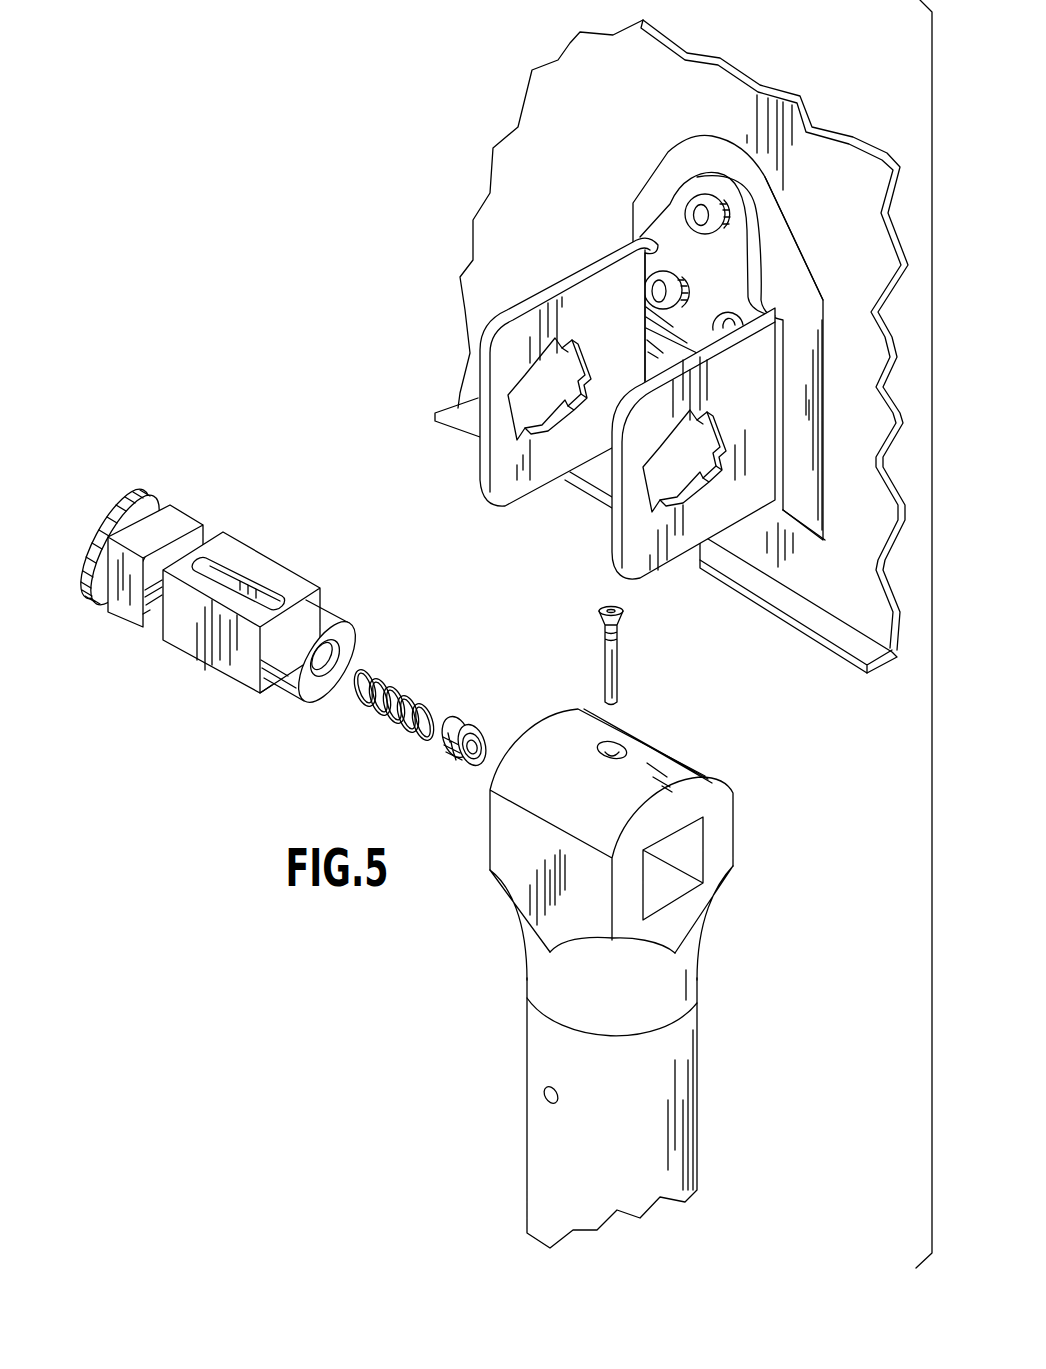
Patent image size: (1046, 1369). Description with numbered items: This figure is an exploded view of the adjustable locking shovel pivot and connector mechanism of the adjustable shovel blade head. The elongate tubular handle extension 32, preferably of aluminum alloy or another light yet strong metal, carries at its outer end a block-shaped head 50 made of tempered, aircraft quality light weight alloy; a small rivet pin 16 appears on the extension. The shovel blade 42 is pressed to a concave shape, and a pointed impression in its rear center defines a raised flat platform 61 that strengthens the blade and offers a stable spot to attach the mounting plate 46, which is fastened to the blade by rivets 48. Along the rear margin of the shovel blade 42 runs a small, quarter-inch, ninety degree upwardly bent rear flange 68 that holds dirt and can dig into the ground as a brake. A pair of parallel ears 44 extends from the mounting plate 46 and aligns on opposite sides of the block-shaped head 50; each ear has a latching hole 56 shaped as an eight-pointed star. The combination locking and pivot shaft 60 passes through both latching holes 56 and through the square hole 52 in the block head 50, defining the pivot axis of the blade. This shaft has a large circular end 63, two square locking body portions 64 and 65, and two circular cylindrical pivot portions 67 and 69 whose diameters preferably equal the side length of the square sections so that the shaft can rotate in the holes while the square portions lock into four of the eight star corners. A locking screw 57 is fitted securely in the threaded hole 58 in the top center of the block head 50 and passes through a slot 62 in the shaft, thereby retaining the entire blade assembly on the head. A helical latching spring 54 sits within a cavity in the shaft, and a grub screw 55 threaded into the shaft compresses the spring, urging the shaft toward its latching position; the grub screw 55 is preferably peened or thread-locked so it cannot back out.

The rivet pin 16 is at (546, 1100).
The tubular handle extension 32 is at (617, 1109).
The shovel blade 42 is at (727, 84).
The ears 44 is at (675, 398).
The mounting plate 46 is at (727, 337).
The rivets 48 is at (716, 320).
The block-shaped head 50 is at (646, 844).
The square hole 52 is at (693, 857).
The latching spring 54 is at (403, 688).
The grub screw 55 is at (473, 723).
The latching holes 56 is at (578, 349).
The locking screw 57 is at (620, 660).
The threaded hole 58 is at (614, 744).
The combination locking and pivot shaft 60 is at (223, 565).
The platform 61 is at (765, 284).
The slot 62 is at (234, 560).
The large circular end 63 is at (148, 503).
The square locking body portion 64 is at (188, 518).
The square locking body portion 65 is at (270, 604).
The circular cylindrical pivot portion 67 is at (138, 612).
The rear flange 68 is at (847, 633).
The circular cylindrical pivot portion 69 is at (328, 618).